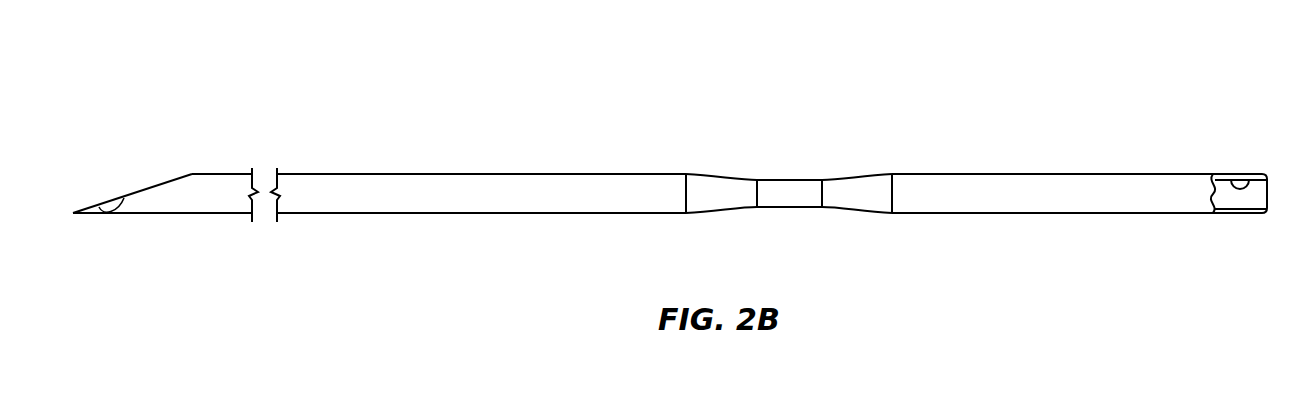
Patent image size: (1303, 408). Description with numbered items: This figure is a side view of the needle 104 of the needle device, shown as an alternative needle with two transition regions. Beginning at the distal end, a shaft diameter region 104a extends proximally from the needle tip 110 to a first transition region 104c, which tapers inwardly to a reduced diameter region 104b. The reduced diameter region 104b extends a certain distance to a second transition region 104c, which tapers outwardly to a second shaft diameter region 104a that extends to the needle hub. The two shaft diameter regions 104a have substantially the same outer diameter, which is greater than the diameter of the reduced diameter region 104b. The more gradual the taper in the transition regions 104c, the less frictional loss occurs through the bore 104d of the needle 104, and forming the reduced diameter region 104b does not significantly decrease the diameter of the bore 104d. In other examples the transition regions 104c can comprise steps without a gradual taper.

The needle 104 is at (438, 82).
The shaft diameter region 104a is at (223, 173).
The reduced diameter region 104b is at (790, 212).
The transition region 104c is at (853, 173).
The bore 104d is at (1253, 178).
The needle tip 110 is at (143, 190).